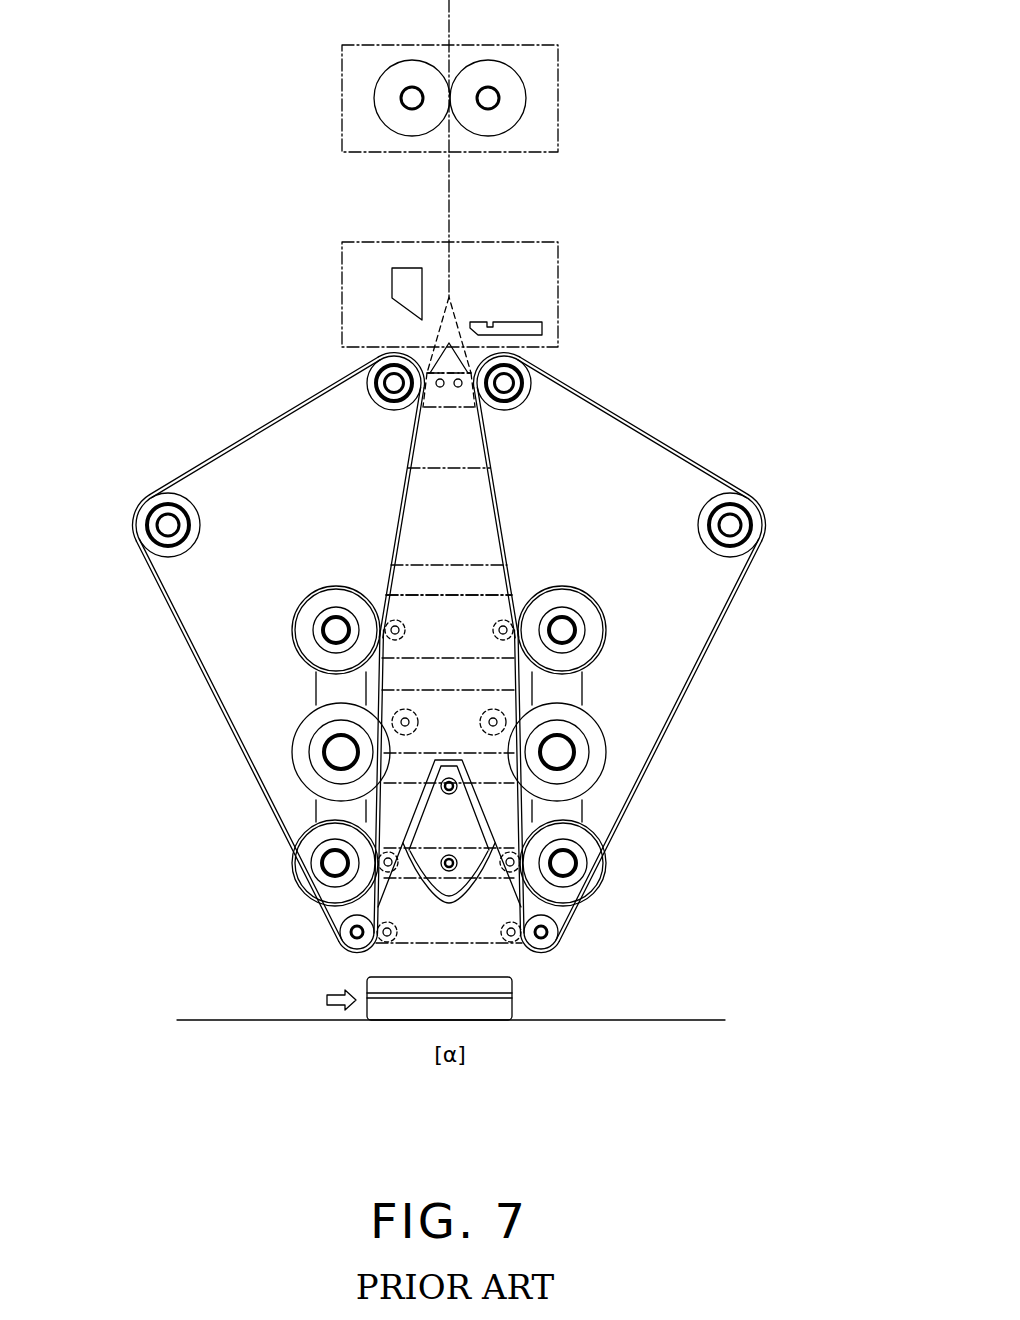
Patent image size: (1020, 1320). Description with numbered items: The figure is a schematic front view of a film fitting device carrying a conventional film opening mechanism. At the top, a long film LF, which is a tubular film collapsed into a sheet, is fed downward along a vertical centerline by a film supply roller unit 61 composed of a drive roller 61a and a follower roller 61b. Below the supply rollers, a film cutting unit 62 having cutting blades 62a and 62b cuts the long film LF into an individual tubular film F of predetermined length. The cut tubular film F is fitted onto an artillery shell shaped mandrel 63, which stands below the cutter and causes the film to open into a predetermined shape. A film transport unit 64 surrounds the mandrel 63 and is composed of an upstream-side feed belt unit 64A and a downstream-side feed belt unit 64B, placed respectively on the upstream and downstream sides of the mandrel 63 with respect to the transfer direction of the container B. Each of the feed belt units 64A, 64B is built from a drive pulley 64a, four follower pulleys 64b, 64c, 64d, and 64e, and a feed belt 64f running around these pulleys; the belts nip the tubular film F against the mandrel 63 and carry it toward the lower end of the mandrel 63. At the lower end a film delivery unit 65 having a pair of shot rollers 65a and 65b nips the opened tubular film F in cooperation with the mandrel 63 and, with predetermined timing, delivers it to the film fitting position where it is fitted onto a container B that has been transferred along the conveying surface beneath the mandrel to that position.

The film supply roller unit 61 is at (415, 83).
The drive roller 61a is at (411, 63).
The follower roller 61b is at (487, 63).
The long film LF is at (452, 188).
The film cutting unit 62 is at (415, 279).
The cutting blade 62a is at (407, 268).
The cutting blade 62b is at (508, 322).
The mandrel 63 is at (436, 642).
The film transport unit 64 is at (416, 653).
The upstream-side feed belt unit 64A is at (300, 401).
The downstream-side feed belt unit 64B is at (598, 401).
The drive pulley 64a is at (298, 865).
The follower pulley 64b is at (200, 524).
The follower pulley 64c is at (384, 410).
The follower pulley 64d is at (300, 630).
The follower pulley 64e is at (300, 740).
The feed belt 64f is at (200, 668).
The tubular film F is at (497, 591).
The film delivery unit 65 is at (407, 951).
The shot roller 65a is at (333, 946).
The shot roller 65b is at (567, 946).
The container B is at (512, 1000).